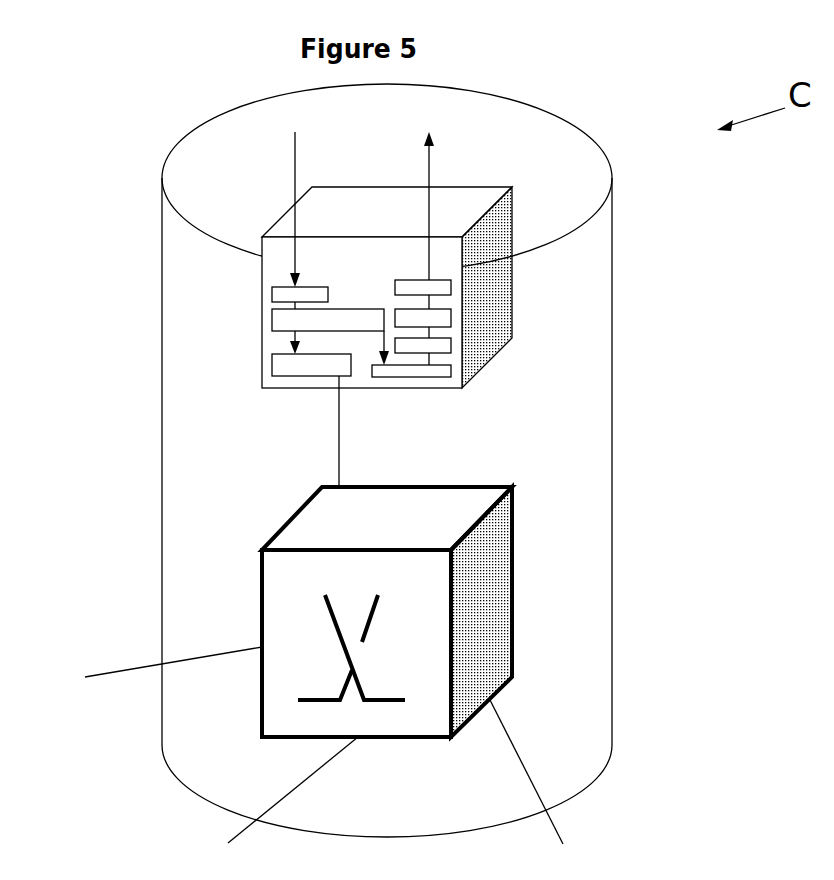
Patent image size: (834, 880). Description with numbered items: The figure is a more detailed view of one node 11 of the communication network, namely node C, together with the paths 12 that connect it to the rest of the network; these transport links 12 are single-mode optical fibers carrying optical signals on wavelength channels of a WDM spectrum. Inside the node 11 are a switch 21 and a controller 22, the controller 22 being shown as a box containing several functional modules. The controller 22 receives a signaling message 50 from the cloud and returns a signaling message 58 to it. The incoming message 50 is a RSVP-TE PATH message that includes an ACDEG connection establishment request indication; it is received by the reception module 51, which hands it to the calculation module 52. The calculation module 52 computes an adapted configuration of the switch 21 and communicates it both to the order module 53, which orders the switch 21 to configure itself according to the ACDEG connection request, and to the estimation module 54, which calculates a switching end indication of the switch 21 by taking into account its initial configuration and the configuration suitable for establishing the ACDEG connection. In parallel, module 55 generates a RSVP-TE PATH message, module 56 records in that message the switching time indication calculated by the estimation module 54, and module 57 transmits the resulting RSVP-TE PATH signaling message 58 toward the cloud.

The node 11 is at (617, 215).
The transport link 12 is at (117, 665).
The switch 21 is at (517, 608).
The controller 22 is at (462, 185).
The signaling message 50 is at (295, 173).
The reception module 51 is at (272, 296).
The calculation module 52 is at (272, 322).
The order module 53 is at (272, 365).
The estimation module 54 is at (451, 366).
The message generation module 55 is at (451, 347).
The recording module 56 is at (451, 320).
The transmission module 57 is at (451, 295).
The signaling message 58 is at (430, 172).